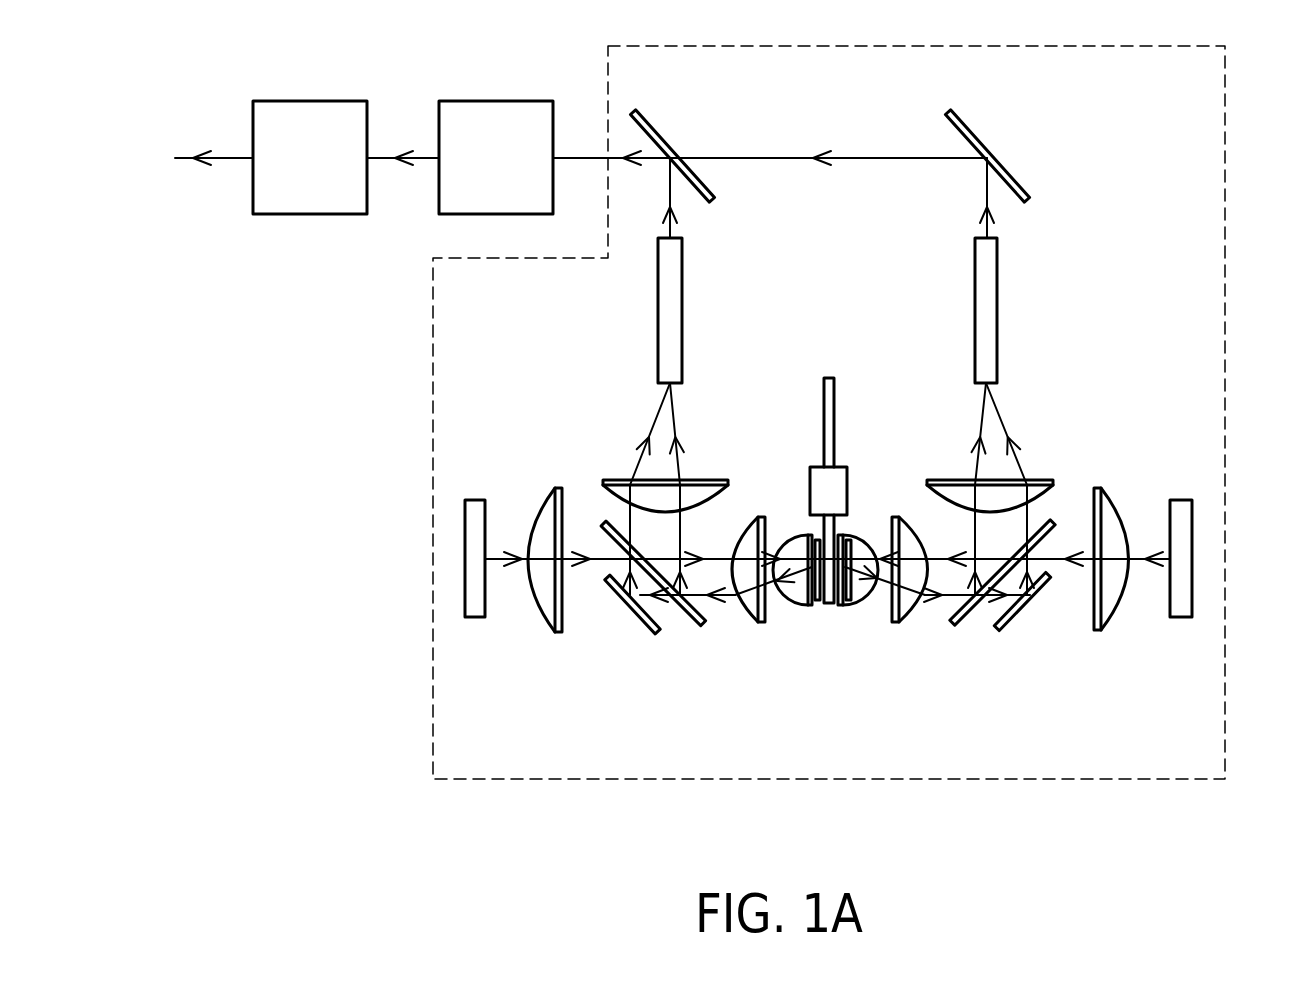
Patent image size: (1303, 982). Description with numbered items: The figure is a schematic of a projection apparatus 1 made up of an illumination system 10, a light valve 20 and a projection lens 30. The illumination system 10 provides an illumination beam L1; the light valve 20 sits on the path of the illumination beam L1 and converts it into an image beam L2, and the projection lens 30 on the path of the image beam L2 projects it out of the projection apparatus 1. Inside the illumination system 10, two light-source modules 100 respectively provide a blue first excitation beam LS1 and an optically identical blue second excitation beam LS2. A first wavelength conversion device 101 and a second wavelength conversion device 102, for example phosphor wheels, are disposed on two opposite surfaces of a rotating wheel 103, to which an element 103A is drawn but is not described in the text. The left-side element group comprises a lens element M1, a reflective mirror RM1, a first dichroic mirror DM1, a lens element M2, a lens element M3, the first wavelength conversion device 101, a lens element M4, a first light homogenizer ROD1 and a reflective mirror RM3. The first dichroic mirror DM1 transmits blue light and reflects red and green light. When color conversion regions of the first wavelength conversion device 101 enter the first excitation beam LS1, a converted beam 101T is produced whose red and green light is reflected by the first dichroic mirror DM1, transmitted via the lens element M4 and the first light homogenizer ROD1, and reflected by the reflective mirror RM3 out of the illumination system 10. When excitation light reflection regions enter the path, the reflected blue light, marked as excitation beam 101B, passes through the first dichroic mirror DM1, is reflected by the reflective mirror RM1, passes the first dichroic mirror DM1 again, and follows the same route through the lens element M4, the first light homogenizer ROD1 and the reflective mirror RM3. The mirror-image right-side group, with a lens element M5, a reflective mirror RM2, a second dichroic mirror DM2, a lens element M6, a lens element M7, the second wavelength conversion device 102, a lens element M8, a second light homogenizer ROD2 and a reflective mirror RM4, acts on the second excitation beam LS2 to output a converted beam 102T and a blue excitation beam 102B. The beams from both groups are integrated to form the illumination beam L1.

The projection apparatus 1 is at (1233, 827).
The illumination system 10 is at (1226, 91).
The light valve 20 is at (492, 100).
The projection lens 30 is at (305, 100).
The illumination beam L1 is at (576, 155).
The image beam L2 is at (229, 155).
The light-source module 100 is at (475, 500).
The first wavelength conversion device 101 is at (822, 604).
The second wavelength conversion device 102 is at (836, 604).
The rotating wheel 103 is at (829, 376).
The motor 103A is at (847, 470).
The converted beam 101T is at (680, 410).
The excitation beam 101B is at (655, 413).
The converted beam 102T is at (983, 410).
The blue excitation beam 102B is at (1000, 414).
The first excitation beam LS1 is at (499, 555).
The second excitation beam LS2 is at (935, 555).
The lens element M1 is at (548, 612).
The lens element M2 is at (745, 615).
The lens element M3 is at (800, 605).
The lens element M4 is at (640, 487).
The lens element M5 is at (1105, 612).
The lens element M6 is at (905, 615).
The lens element M7 is at (855, 605).
The lens element M8 is at (1020, 487).
The reflective mirror RM1 is at (637, 628).
The reflective mirror RM2 is at (1025, 625).
The reflective mirror RM3 is at (655, 122).
The reflective mirror RM4 is at (971, 122).
The first dichroic mirror DM1 is at (690, 622).
The second dichroic mirror DM2 is at (973, 625).
The first light homogenizer ROD1 is at (670, 309).
The second light homogenizer ROD2 is at (997, 309).